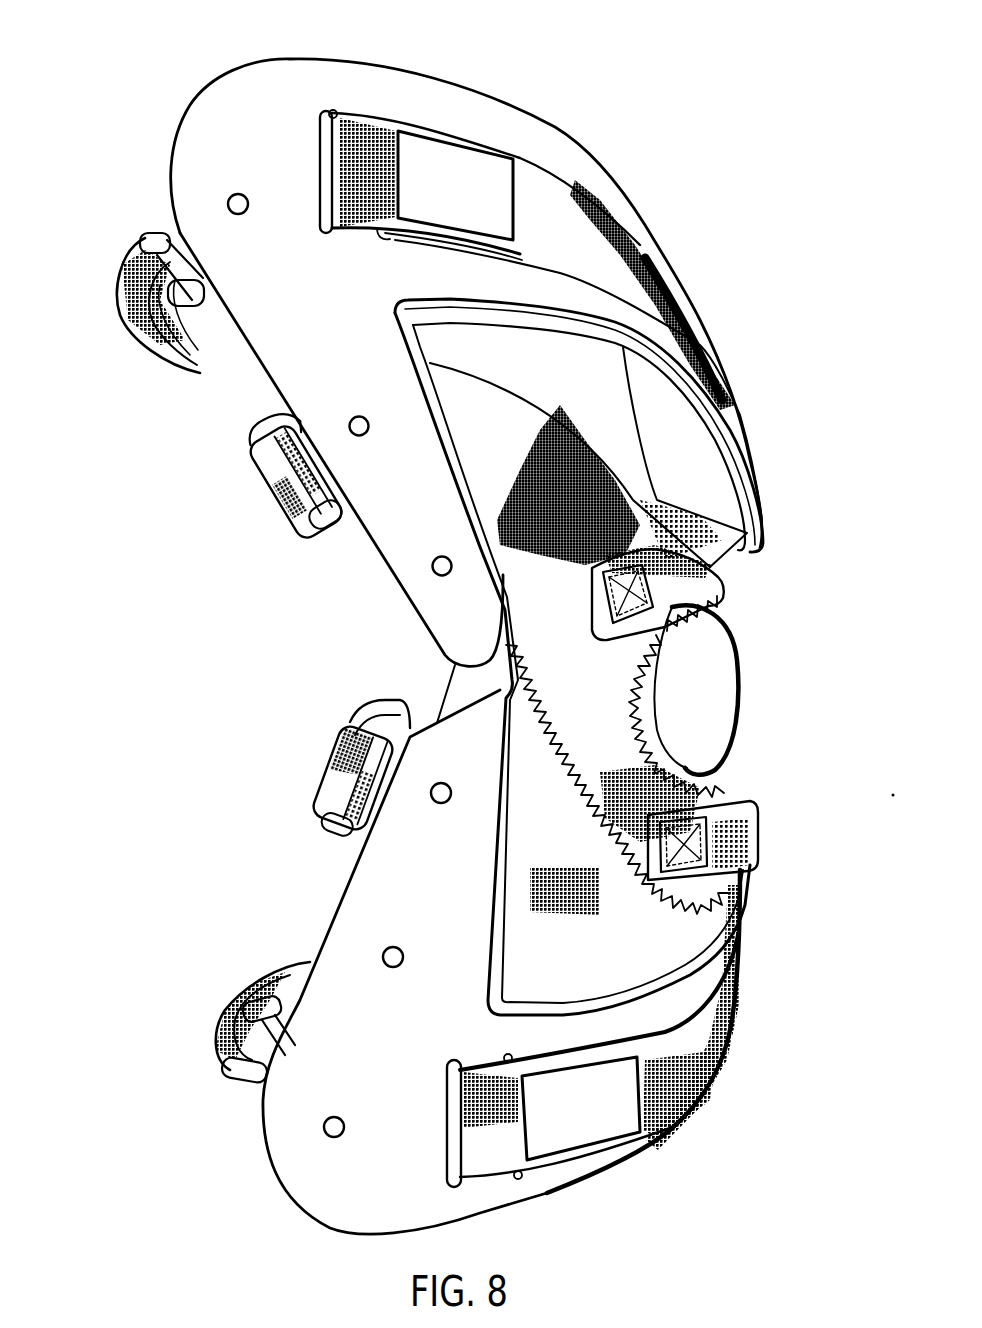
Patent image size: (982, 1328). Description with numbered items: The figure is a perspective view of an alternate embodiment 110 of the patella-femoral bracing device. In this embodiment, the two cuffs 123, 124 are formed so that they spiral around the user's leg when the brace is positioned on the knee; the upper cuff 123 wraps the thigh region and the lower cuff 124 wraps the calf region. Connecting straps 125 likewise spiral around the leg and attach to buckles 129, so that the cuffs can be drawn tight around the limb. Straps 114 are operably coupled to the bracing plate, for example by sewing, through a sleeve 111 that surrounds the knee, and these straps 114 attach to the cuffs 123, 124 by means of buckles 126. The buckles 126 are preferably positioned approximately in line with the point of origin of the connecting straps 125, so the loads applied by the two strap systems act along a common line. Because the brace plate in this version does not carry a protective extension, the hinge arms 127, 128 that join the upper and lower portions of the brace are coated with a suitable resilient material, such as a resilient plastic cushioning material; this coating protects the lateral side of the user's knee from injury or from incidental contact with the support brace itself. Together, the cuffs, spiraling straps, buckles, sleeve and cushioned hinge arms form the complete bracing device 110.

The alternate embodiment of the bracing device 110 is at (666, 192).
The sleeve 111 is at (720, 780).
The straps 114 is at (712, 573).
The cuff 123 is at (313, 78).
The cuff 124 is at (580, 1163).
The connecting straps 125 is at (677, 277).
The buckles 126 is at (148, 250).
The hinge arm 127 is at (403, 547).
The hinge arm 128 is at (363, 908).
The buckles 129 is at (263, 437).